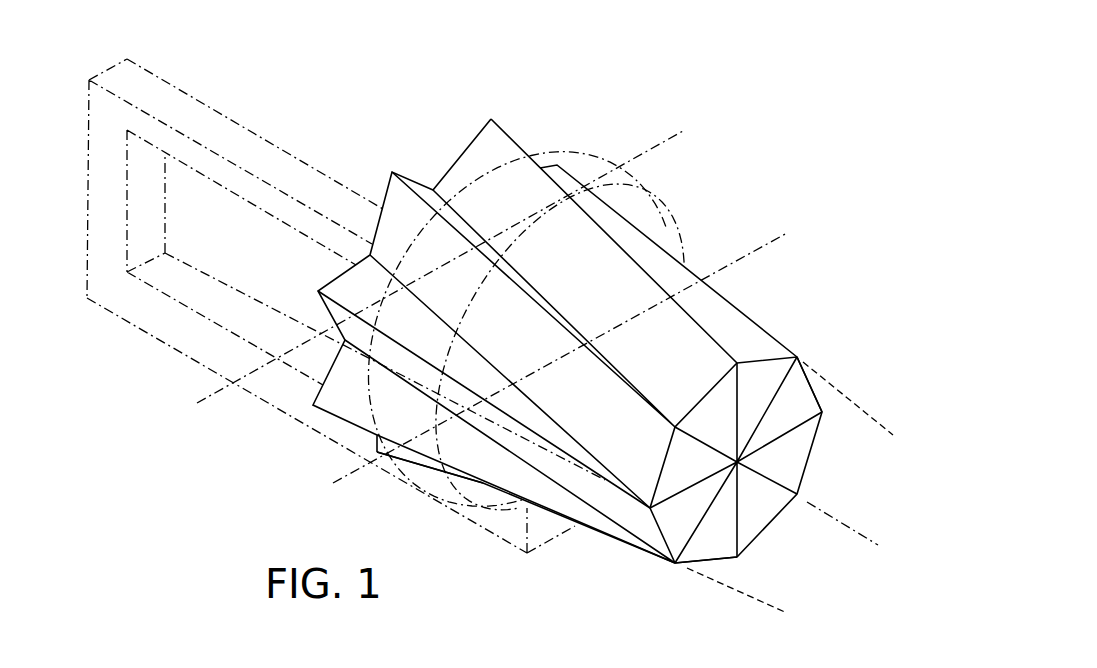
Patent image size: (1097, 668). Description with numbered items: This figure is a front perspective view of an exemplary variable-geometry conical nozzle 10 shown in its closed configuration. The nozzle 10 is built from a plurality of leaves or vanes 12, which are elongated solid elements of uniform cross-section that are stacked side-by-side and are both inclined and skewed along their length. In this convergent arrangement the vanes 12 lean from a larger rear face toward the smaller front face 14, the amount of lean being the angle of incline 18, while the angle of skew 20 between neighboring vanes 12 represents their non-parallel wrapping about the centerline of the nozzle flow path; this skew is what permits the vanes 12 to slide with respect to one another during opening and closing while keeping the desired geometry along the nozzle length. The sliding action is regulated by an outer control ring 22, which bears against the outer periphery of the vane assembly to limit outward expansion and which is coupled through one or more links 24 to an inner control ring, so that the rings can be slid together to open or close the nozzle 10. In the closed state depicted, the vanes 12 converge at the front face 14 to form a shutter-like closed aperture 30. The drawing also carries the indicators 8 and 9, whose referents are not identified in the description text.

The nozzle 10 is at (605, 366).
The leaves or vanes 12 is at (640, 470).
The front face 14 is at (707, 558).
The angle of incline 18 is at (838, 379).
The angle of skew 20 is at (407, 340).
The outer control ring 22 is at (664, 217).
The link 24 is at (260, 138).
The closed aperture 30 is at (783, 457).
The section line 8- 8 is at (787, 233).
The section line 9- 9 is at (683, 131).